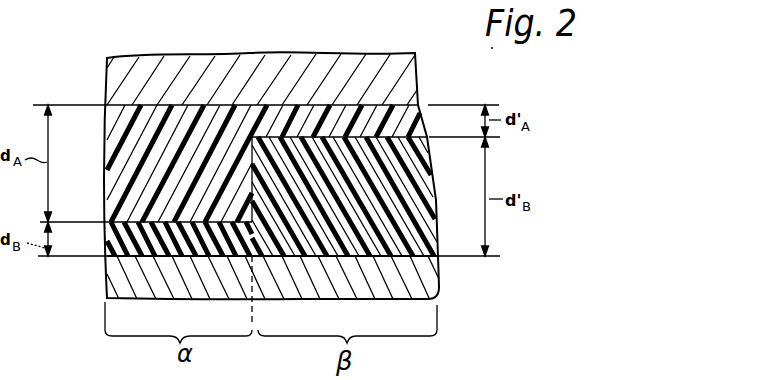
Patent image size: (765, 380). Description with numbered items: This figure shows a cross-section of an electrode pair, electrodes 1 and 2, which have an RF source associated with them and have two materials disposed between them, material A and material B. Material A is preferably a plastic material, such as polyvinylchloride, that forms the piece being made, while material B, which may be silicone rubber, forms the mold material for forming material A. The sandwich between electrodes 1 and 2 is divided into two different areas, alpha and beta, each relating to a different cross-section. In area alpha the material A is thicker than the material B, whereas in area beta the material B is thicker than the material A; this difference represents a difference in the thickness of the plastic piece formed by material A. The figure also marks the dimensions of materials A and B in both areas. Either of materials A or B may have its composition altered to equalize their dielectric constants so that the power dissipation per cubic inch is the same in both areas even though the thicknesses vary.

The electrode 1 is at (262, 66).
The electrode 2 is at (273, 294).
The material A is at (395, 118).
The material B is at (436, 272).